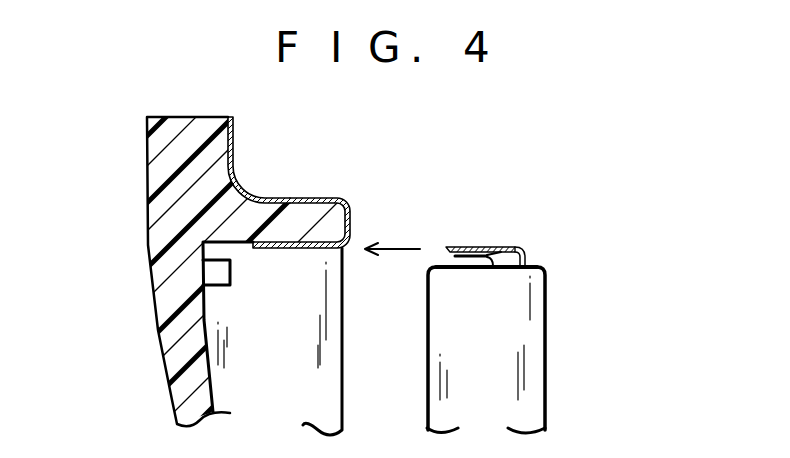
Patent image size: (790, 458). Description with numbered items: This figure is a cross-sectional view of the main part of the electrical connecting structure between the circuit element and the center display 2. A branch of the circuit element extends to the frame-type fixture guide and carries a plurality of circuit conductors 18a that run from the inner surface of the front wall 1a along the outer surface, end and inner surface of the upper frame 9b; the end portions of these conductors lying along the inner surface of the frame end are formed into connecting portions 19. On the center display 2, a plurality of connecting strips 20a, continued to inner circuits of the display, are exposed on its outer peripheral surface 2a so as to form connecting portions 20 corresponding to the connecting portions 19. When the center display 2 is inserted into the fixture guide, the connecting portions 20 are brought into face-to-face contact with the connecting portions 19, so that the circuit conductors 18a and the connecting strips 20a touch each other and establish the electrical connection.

The front wall 1a is at (155, 220).
The circuit conductors 18a is at (234, 150).
The upper frame 9b is at (330, 214).
The connecting portions 19 is at (289, 277).
The connecting portions 20 is at (474, 220).
The connecting strips 20a is at (508, 247).
The outer peripheral surface 2a is at (441, 264).
The center display 2 is at (533, 316).